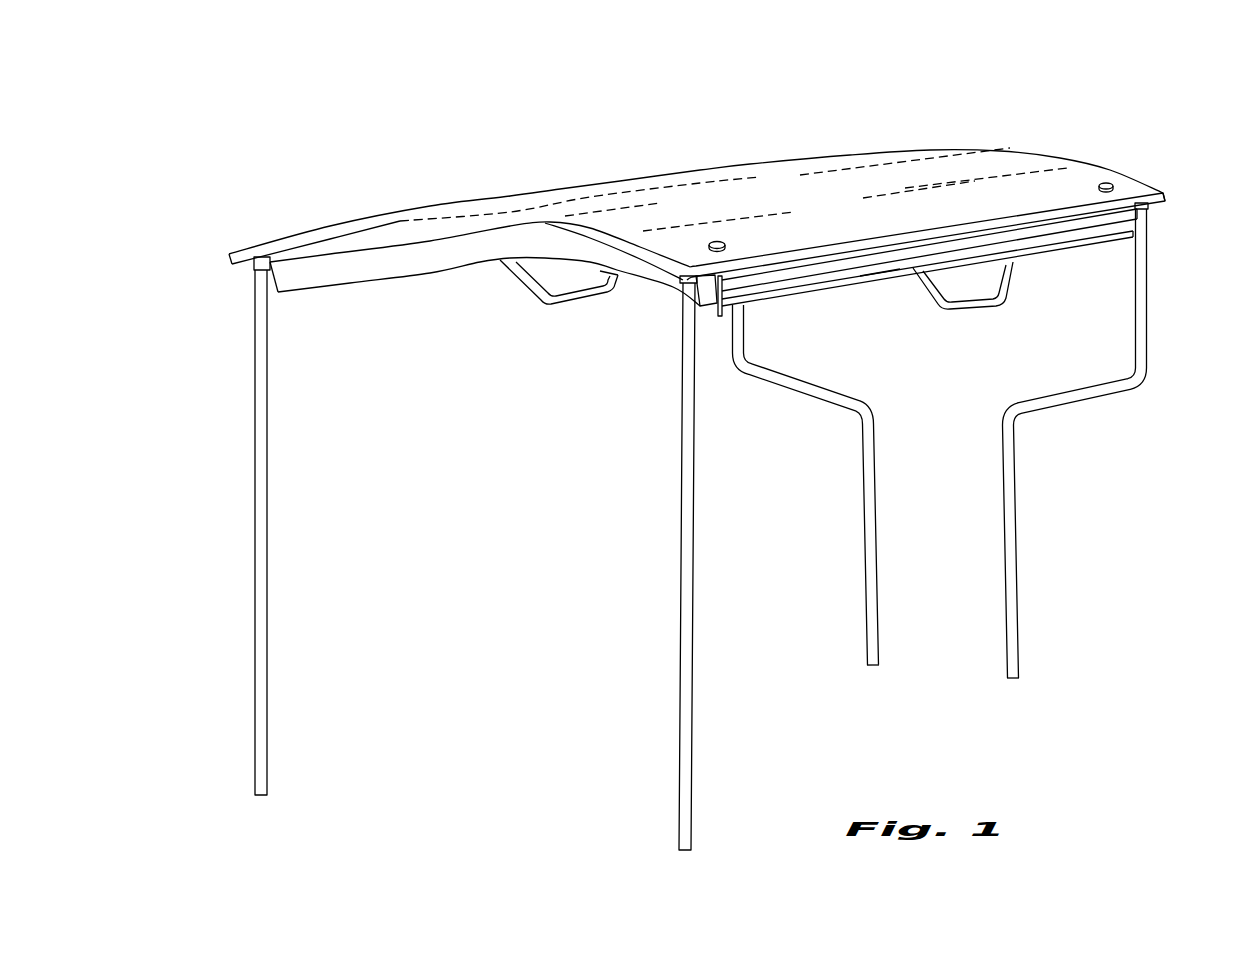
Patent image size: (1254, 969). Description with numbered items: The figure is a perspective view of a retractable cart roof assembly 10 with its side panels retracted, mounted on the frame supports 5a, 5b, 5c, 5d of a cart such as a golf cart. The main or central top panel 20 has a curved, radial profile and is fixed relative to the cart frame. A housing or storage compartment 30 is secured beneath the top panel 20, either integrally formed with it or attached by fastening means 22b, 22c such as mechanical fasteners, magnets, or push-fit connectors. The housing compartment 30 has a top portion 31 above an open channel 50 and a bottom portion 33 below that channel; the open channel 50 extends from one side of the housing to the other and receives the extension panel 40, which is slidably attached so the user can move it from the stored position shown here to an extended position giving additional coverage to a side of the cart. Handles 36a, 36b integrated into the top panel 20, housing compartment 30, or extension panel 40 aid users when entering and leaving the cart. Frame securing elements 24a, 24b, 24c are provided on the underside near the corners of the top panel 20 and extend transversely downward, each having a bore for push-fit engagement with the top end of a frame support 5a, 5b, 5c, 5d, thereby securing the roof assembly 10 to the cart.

The retractable cart roof assembly 10 is at (428, 103).
The top panel 20 is at (822, 200).
The fastening means 22b is at (718, 241).
The fastening means 22c is at (1106, 183).
The frame securing element 24a is at (254, 268).
The frame securing element 24b is at (680, 280).
The frame securing element 24c is at (1150, 210).
The housing compartment 30 is at (334, 253).
The top portion 31 is at (833, 262).
The bottom portion 33 is at (795, 296).
The handle 36a is at (578, 306).
The handle 36b is at (985, 313).
The extension panel 40 is at (880, 280).
The open channel 50 is at (722, 324).
The frame support 5a is at (268, 742).
The frame support 5b is at (692, 800).
The frame support 5c is at (1020, 568).
The frame support 5d is at (879, 613).